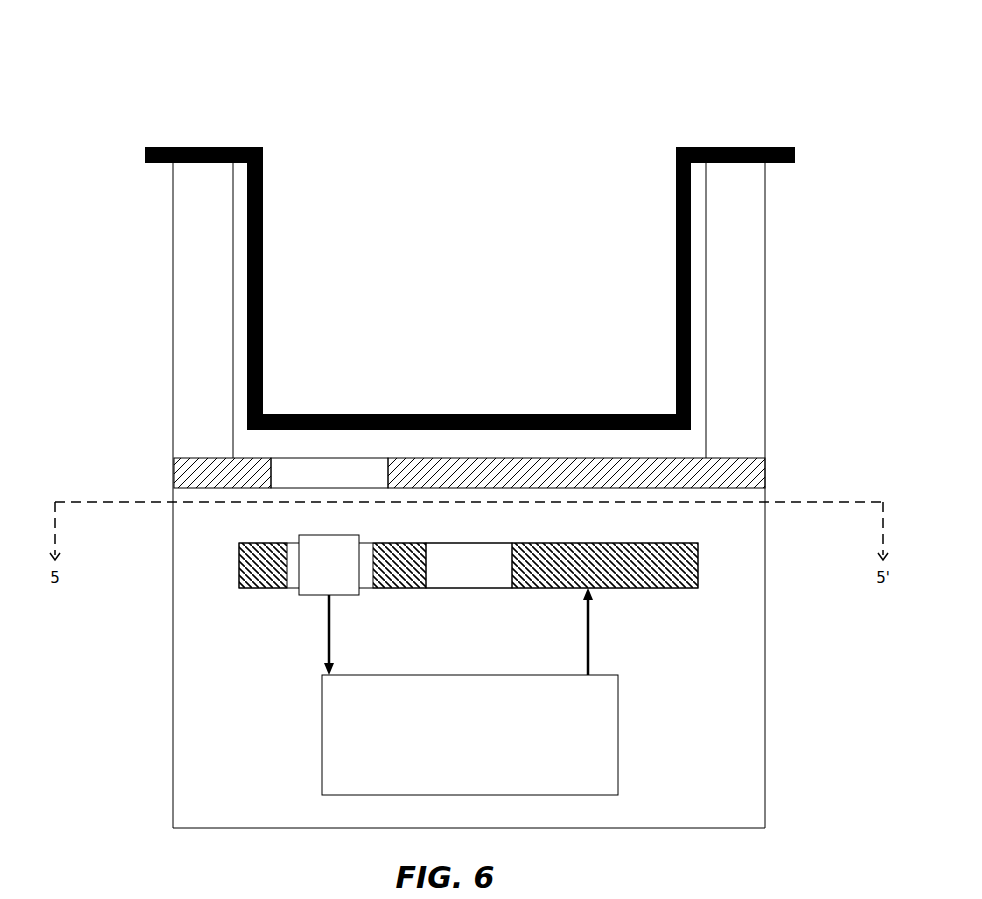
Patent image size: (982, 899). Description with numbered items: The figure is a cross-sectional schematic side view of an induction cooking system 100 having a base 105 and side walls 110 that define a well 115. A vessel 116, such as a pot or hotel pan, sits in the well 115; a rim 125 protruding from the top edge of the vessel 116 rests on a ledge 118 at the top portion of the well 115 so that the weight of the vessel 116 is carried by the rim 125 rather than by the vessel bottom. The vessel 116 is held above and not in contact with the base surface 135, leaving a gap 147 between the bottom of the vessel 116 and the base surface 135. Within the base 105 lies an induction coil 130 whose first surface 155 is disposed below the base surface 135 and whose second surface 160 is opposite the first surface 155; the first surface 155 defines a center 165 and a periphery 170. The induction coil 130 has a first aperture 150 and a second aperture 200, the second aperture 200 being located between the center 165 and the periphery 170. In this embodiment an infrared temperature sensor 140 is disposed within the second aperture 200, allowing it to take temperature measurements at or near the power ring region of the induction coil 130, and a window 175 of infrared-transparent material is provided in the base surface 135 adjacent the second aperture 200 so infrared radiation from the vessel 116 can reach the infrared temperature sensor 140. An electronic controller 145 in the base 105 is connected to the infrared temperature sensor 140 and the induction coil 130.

The induction cooking system 100 is at (105, 80).
The base 105 is at (765, 678).
The side walls 110 is at (190, 321).
The well 115 is at (437, 275).
The vessel 116 is at (677, 297).
The ledge 118 is at (754, 174).
The rim 125 is at (737, 148).
The induction coil 130 is at (661, 575).
The base surface 135 is at (731, 482).
The infrared temperature sensor 140 is at (314, 575).
The electronic controller 145 is at (456, 744).
The gap 147 is at (493, 443).
The first aperture 150 is at (492, 587).
The first surface 155 is at (681, 534).
The second surface 160 is at (681, 596).
The center 165 is at (462, 530).
The periphery 170 is at (230, 544).
The window 175 is at (314, 482).
The second aperture 200 is at (293, 588).